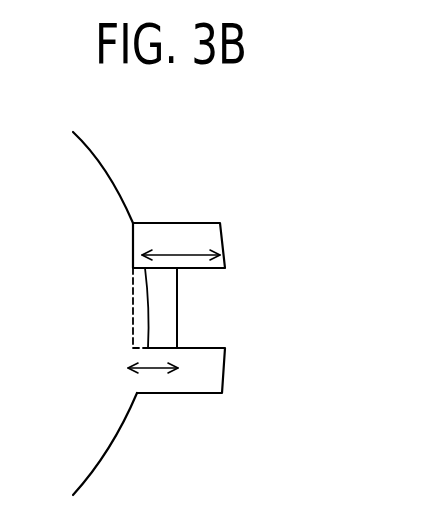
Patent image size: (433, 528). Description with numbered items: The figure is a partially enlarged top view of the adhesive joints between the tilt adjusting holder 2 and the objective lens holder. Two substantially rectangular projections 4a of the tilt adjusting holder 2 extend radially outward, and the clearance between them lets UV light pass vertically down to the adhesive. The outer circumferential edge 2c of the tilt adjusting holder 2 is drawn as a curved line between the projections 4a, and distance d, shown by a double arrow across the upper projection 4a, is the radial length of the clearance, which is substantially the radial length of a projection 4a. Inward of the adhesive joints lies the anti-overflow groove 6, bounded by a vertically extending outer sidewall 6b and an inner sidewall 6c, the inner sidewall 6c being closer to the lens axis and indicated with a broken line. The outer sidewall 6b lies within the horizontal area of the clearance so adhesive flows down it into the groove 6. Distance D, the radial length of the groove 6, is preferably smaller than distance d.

The tilt adjusting holder 2 is at (86, 175).
The projection 4a is at (205, 223).
The inner sidewall 6c is at (133, 312).
The outer circumferential edge 2c is at (150, 290).
The anti-overflow groove 6 is at (168, 325).
The outer sidewall 6b is at (178, 303).
The distance d is at (183, 250).
The distance D is at (146, 373).